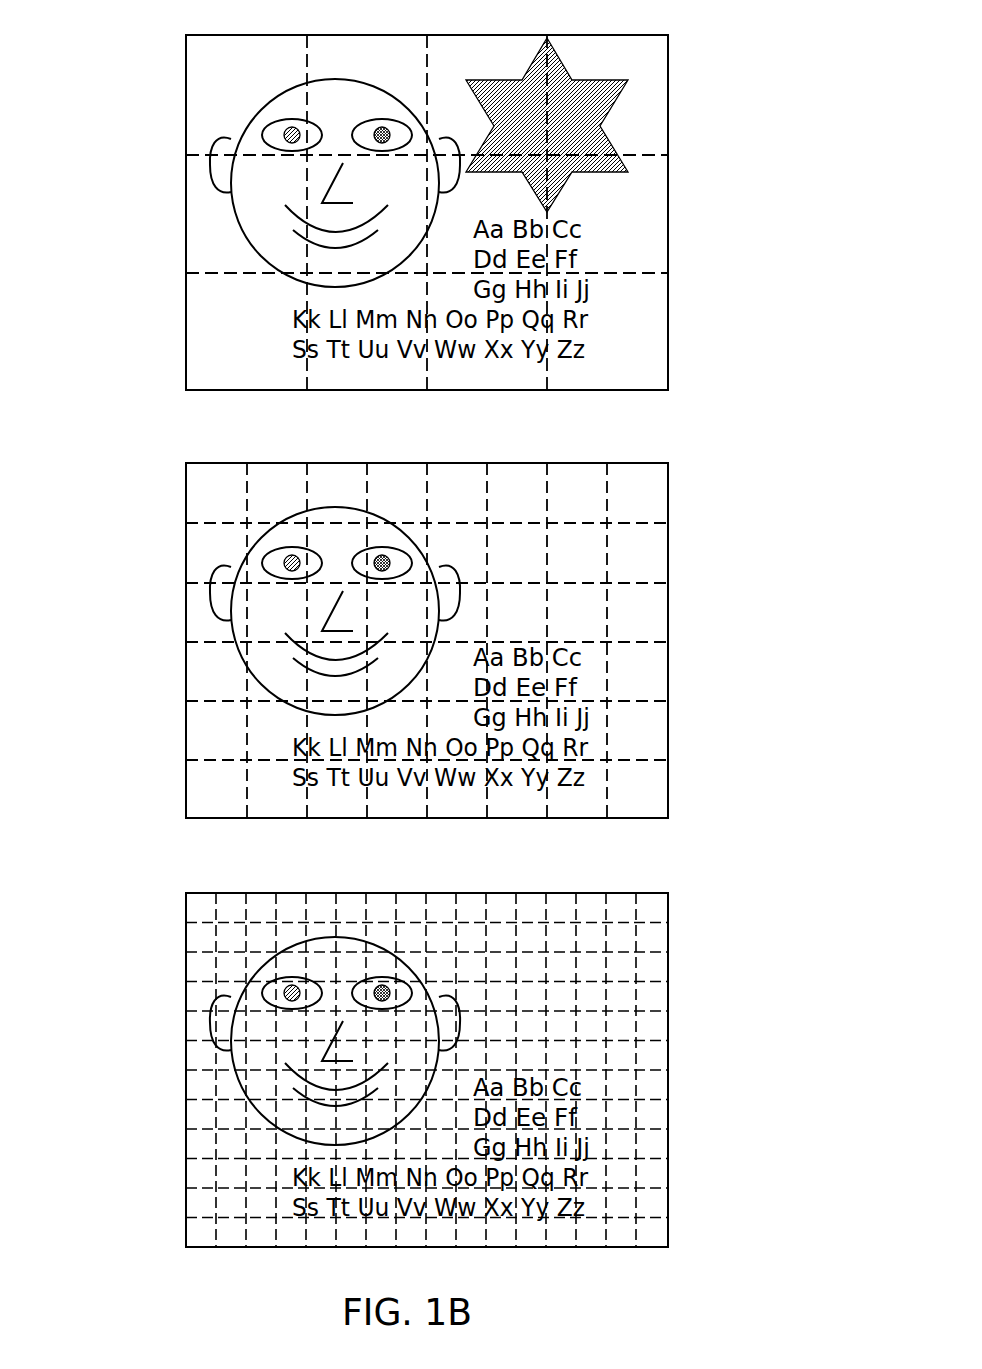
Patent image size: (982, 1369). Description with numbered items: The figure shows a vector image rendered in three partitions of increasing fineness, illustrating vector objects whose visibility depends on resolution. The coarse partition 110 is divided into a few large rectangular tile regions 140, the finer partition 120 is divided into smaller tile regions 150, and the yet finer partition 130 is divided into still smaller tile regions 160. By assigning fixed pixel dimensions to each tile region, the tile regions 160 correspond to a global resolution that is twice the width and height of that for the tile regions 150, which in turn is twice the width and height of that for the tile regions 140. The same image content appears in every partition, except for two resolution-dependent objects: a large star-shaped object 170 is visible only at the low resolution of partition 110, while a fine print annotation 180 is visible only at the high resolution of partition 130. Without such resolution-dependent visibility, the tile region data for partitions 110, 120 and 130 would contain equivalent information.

The coarse partition 110 is at (158, 228).
The finer partition 120 is at (158, 656).
The yet finer partition 130 is at (158, 1081).
The tile regions 140 is at (628, 50).
The tile regions 150 is at (638, 553).
The tile regions 160 is at (653, 967).
The large star-shaped object 170 is at (502, 73).
The fine print annotation 180 is at (563, 937).